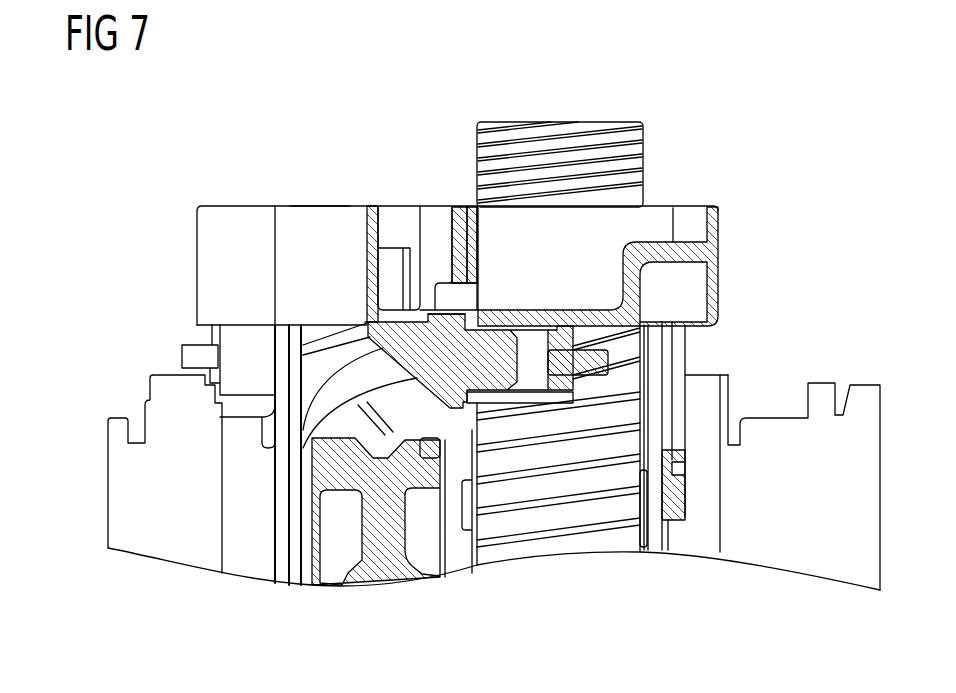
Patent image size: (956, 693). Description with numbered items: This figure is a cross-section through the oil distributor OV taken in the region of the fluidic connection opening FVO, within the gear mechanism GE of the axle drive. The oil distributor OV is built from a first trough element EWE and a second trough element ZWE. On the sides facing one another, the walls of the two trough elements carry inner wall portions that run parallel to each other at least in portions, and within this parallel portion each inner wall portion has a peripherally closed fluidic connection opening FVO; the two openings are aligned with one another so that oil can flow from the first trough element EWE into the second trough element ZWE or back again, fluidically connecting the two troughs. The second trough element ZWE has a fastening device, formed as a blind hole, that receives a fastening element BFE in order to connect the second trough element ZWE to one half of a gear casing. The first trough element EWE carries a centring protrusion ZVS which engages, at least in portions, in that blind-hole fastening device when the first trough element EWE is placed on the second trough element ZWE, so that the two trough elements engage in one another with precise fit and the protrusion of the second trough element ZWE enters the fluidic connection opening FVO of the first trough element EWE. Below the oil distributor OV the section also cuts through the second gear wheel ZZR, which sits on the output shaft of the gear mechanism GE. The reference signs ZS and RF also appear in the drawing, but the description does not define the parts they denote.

The gear mechanism GE is at (148, 187).
The oil distributor OV is at (324, 155).
The first trough element EWE is at (300, 242).
The intermediate shoulder ZS is at (447, 284).
The centring protrusion ZVS is at (500, 360).
The second trough element ZWE is at (647, 228).
The fluidic connection opening FVO is at (427, 317).
The fastening element BFE is at (591, 362).
The rotor flange RF is at (537, 400).
The second gear wheel ZZR is at (595, 485).